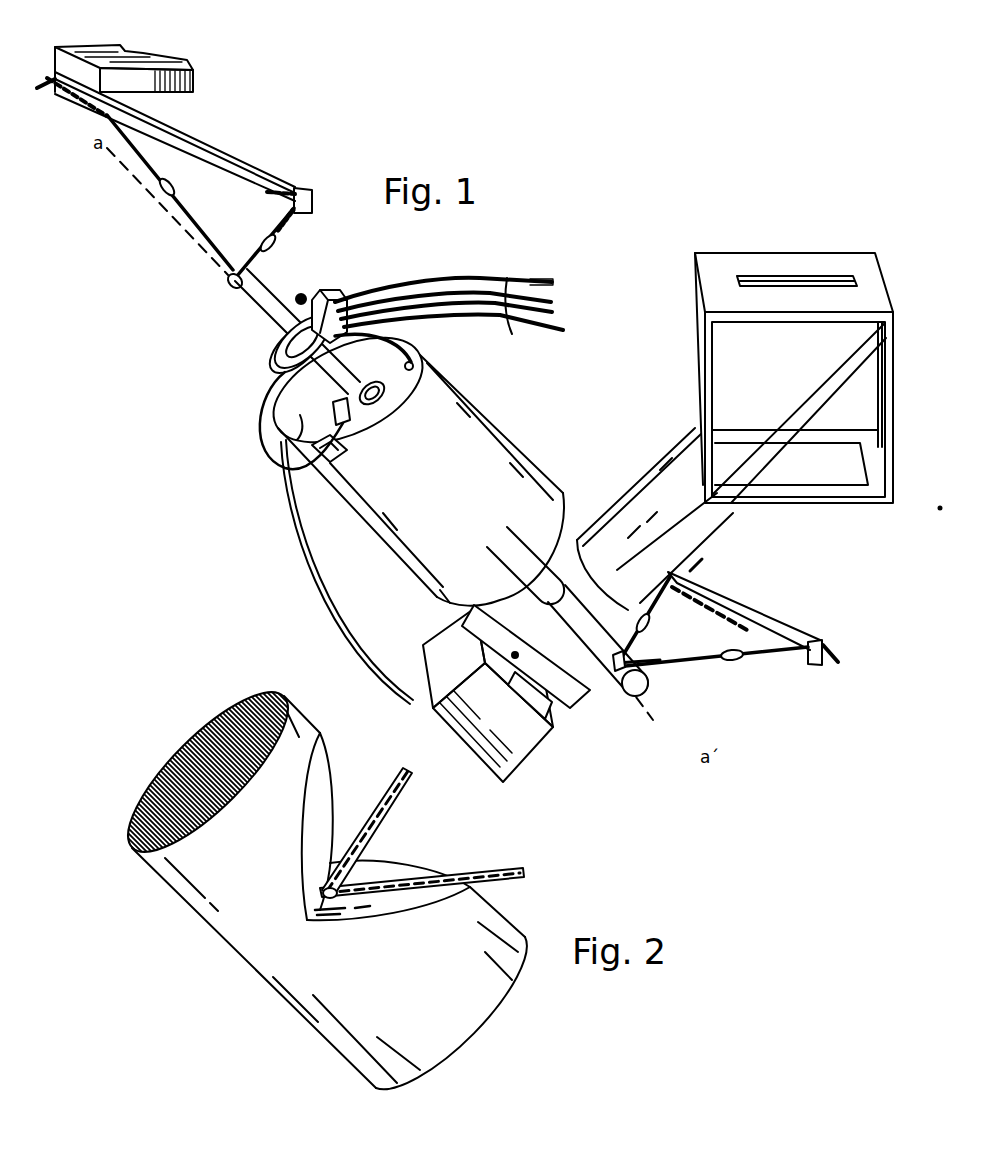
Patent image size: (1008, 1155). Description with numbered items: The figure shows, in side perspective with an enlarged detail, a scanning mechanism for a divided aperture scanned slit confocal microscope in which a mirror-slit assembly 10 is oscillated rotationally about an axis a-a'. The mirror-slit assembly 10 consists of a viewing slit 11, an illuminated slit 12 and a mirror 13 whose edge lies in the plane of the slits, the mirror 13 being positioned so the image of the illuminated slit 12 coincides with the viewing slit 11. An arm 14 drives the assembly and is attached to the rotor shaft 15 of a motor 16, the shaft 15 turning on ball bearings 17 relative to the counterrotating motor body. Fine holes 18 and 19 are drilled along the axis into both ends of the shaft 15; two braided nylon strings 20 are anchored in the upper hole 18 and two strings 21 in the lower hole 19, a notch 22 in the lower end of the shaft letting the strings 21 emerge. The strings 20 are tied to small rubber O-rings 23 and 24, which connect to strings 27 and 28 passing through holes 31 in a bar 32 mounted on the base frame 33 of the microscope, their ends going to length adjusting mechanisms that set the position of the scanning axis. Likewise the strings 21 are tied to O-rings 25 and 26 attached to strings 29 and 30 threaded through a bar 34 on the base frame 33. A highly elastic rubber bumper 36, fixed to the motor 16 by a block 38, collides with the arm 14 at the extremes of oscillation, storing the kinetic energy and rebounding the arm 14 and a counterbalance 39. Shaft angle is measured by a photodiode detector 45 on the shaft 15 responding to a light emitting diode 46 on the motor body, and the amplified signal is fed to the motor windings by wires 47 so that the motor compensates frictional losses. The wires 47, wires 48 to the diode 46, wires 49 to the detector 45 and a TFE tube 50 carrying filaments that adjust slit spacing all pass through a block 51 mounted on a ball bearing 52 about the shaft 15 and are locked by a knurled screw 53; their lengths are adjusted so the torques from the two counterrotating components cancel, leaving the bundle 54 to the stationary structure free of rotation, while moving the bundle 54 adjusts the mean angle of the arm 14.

In FIG. 1, the mirror-slit assembly 10 is at (745, 252).
In FIG. 1, the viewing slit 11 is at (805, 276).
In FIG. 1, the illuminated slit 12 is at (880, 414).
In FIG. 1, the mirror 13 is at (758, 422).
In FIG. 1, the arm 14 is at (612, 510).
In FIG. 1, the rotor shaft 15 is at (255, 321).
In FIG. 2, the rotor shaft 15 is at (497, 913).
In FIG. 1, the motor 16 is at (497, 415).
In FIG. 1, the ball bearings 17 is at (384, 390).
In FIG. 1, the hole 18 is at (228, 284).
In FIG. 1, the hole 19 is at (620, 692).
In FIG. 2, the hole 19 is at (333, 887).
In FIG. 1, the strings 20 is at (247, 256).
In FIG. 1, the strings 21 is at (650, 668).
In FIG. 2, the strings 21 is at (372, 842).
In FIG. 1, the notch 22 is at (619, 654).
In FIG. 2, the notch 22 is at (322, 803).
In FIG. 1, the O-ring 23 is at (179, 187).
In FIG. 1, the O-ring 24 is at (266, 237).
In FIG. 1, the O-ring 25 is at (645, 630).
In FIG. 1, the O-ring 26 is at (732, 662).
In FIG. 1, the string 27 is at (152, 167).
In FIG. 1, the string 28 is at (293, 226).
In FIG. 1, the string 29 is at (650, 607).
In FIG. 1, the string 30 is at (765, 652).
In FIG. 1, the holes 31 is at (58, 100).
In FIG. 1, the bar 32 is at (207, 138).
In FIG. 1, the base frame 33 is at (118, 47).
In FIG. 1, the bar 34 is at (780, 616).
In FIG. 1, the rubber bumper 36 is at (560, 714).
In FIG. 1, the block 38 is at (575, 694).
In FIG. 1, the counterbalance 39 is at (520, 772).
In FIG. 1, the photodiode light detector 45 is at (360, 425).
In FIG. 1, the light emitting diode 46 is at (335, 470).
In FIG. 1, the wires 47 is at (380, 340).
In FIG. 1, the wires 48 is at (262, 410).
In FIG. 1, the wires 49 is at (298, 428).
In FIG. 1, the TFE tube 50 is at (352, 648).
In FIG. 1, the block 51 is at (331, 292).
In FIG. 1, the ball bearing 52 is at (275, 352).
In FIG. 1, the knurled screw 53 is at (301, 296).
In FIG. 1, the bundle 54 is at (512, 279).